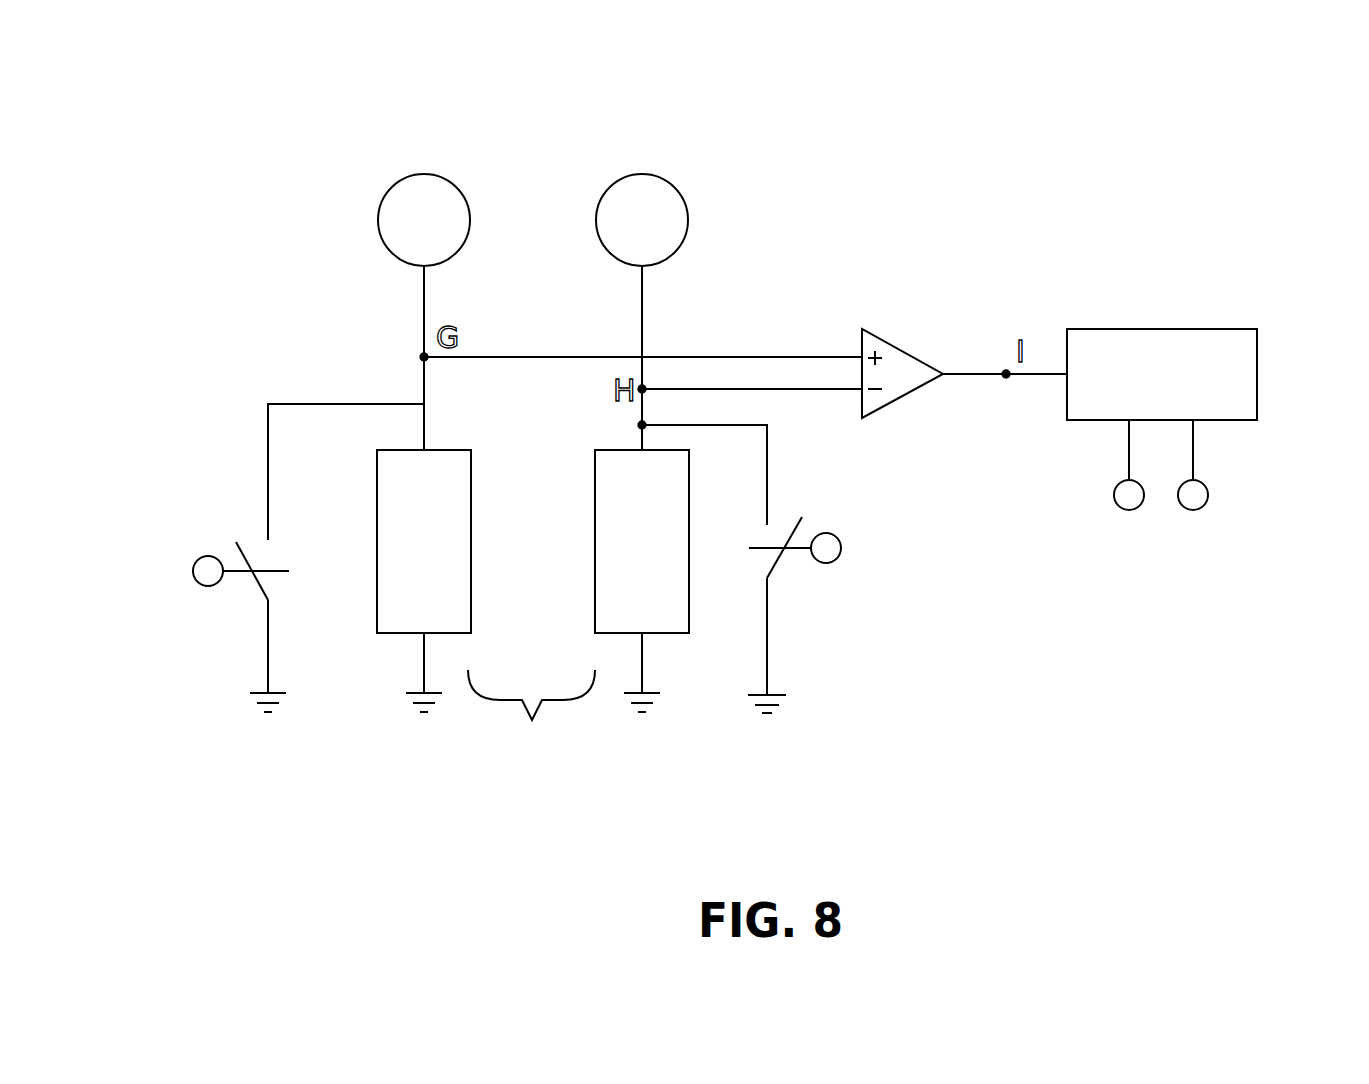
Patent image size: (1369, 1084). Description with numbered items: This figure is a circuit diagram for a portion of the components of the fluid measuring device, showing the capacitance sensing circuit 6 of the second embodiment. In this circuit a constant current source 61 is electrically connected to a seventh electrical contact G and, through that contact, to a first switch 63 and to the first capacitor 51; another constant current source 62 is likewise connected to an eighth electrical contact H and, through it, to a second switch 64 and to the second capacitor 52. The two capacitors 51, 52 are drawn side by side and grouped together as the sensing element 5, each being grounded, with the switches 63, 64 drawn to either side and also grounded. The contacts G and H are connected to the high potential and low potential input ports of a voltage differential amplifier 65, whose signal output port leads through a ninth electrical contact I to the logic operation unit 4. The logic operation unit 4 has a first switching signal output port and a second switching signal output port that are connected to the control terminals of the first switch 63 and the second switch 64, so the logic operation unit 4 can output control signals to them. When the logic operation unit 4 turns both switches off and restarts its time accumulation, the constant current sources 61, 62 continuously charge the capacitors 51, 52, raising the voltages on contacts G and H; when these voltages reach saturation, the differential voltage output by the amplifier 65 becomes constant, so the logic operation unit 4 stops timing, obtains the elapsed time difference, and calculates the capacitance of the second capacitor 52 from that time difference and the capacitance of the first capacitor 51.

The logic operation unit 4 is at (1165, 318).
The sensing unit 5 is at (531, 715).
The capacitance sensing circuit 6 is at (1028, 200).
The first capacitor 51 is at (472, 545).
The second capacitor 52 is at (595, 545).
The constant current source 61 is at (447, 177).
The constant current source 62 is at (667, 177).
The first switch 63 is at (258, 588).
The second switch 64 is at (777, 565).
The voltage differential amplifier 65 is at (903, 350).